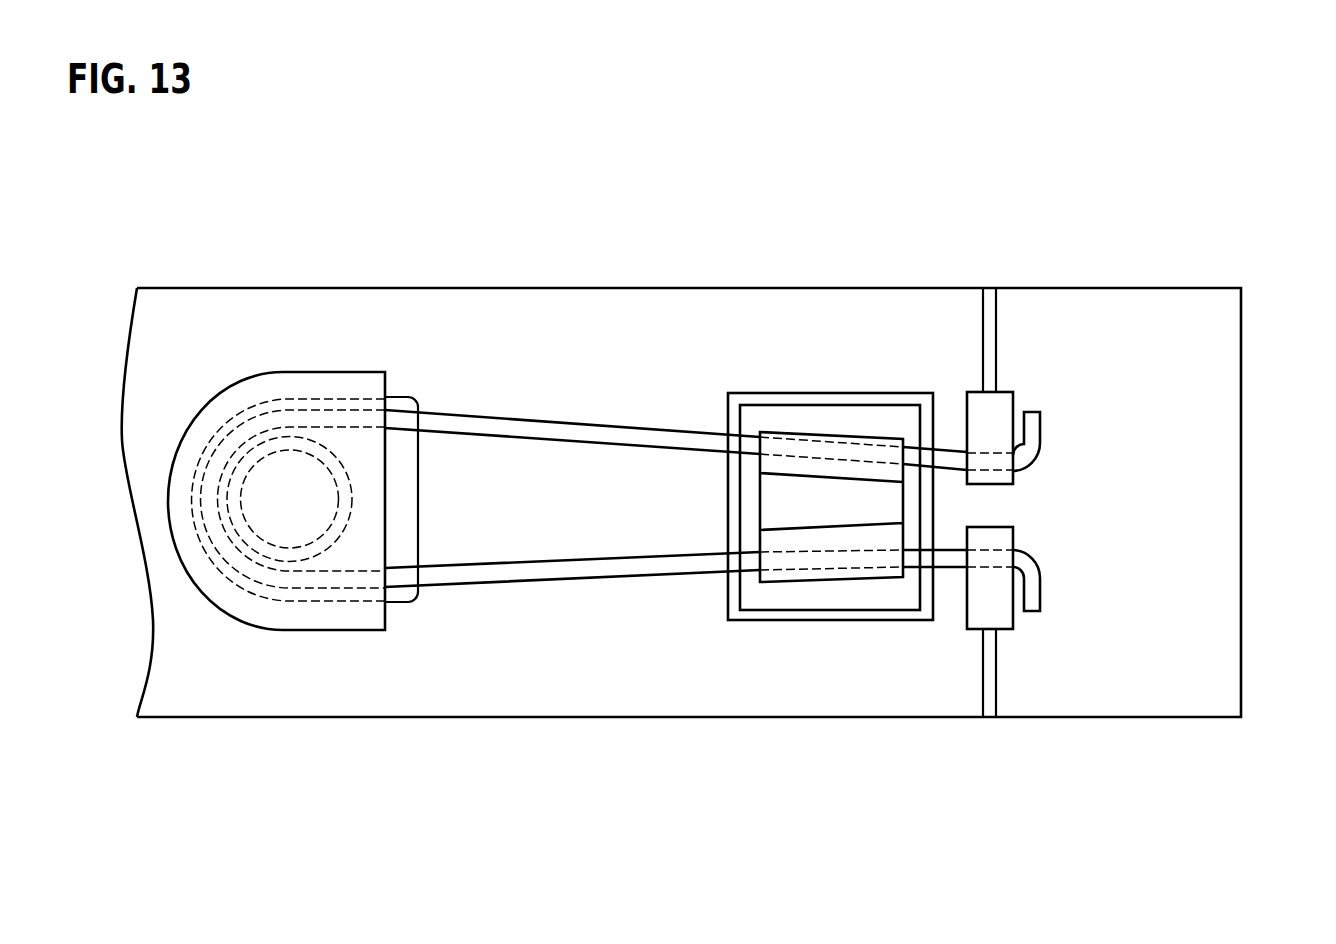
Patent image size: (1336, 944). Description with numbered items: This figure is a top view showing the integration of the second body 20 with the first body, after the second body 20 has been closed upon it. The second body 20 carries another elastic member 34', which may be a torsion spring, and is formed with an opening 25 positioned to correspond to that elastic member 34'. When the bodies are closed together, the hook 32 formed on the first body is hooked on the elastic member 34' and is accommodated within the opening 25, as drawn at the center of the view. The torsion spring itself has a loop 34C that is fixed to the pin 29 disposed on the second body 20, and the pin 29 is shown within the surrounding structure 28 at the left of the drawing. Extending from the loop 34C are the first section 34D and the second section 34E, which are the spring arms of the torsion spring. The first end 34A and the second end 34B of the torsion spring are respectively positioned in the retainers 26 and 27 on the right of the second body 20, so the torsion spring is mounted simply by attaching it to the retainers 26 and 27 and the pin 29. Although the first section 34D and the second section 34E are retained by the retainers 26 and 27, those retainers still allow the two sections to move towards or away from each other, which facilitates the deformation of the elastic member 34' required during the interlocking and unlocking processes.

The second body 20 is at (1241, 480).
The opening 25 is at (840, 410).
The retainer 26 is at (999, 403).
The retainer 27 is at (992, 603).
The coil case 28 is at (320, 372).
The pin 29 is at (270, 437).
The hook 32 is at (865, 437).
The elastic member 34' is at (676, 409).
The first end 34A is at (1033, 428).
The second end 34B is at (1033, 588).
The loop 34C is at (195, 497).
The first section 34D is at (985, 470).
The second section 34E is at (990, 548).